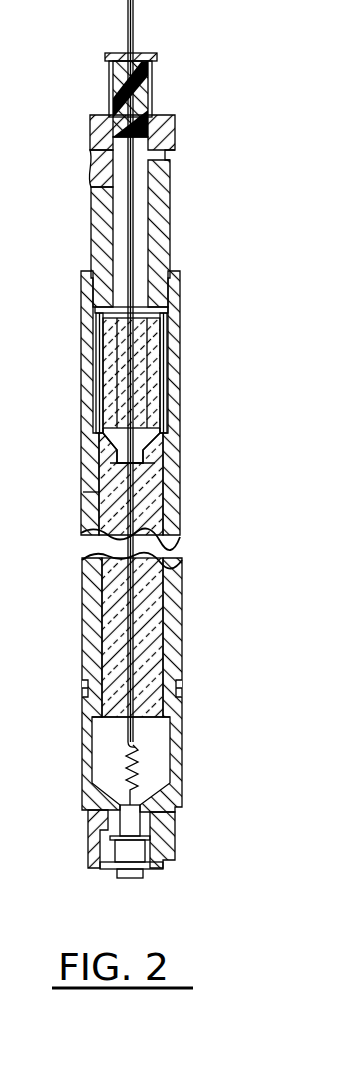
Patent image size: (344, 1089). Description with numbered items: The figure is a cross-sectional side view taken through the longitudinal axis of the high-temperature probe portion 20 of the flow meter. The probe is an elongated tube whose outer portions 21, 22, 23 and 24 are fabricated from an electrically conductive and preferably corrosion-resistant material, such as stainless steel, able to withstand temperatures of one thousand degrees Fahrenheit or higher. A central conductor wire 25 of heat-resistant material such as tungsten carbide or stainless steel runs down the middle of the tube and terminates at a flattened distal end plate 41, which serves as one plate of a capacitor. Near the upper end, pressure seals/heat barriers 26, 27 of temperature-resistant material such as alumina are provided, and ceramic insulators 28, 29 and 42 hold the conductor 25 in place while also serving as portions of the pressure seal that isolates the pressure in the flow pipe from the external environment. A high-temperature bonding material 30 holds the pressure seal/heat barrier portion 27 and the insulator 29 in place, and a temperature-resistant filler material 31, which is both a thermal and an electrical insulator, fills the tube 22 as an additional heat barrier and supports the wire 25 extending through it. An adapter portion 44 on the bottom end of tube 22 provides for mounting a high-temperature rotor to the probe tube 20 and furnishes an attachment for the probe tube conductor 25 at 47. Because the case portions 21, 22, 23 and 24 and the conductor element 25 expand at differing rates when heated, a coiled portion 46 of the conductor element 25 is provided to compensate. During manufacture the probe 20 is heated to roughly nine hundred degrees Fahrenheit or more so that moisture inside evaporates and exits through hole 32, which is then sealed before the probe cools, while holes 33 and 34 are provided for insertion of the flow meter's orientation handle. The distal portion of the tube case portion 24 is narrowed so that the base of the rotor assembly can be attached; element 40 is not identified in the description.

The high-temperature probe portion 20 is at (182, 565).
The outer portion 21 is at (172, 197).
The outer portion 22 is at (181, 307).
The outer portion 23 is at (180, 745).
The outer portion 24 is at (175, 830).
The central conductor wire 25 is at (135, 150).
The pressure seal/heat barrier 26 is at (110, 93).
The pressure seal/heat barrier 27 is at (170, 378).
The ceramic insulator 28 is at (105, 56).
The ceramic insulator 29 is at (170, 434).
The high-temperature bonding material 30 is at (148, 358).
The temperature-resistant filler material 31 is at (165, 490).
The hole 32 is at (95, 492).
The hole 33 is at (162, 156).
The hole 34 is at (95, 156).
The electrode holder 40 is at (150, 840).
The flattened distal end plate 41 is at (135, 880).
The ceramic insulator 42 is at (100, 858).
The adapter portion 44 is at (90, 722).
The coiled portion 46 is at (126, 760).
The attachment means 47 is at (95, 822).